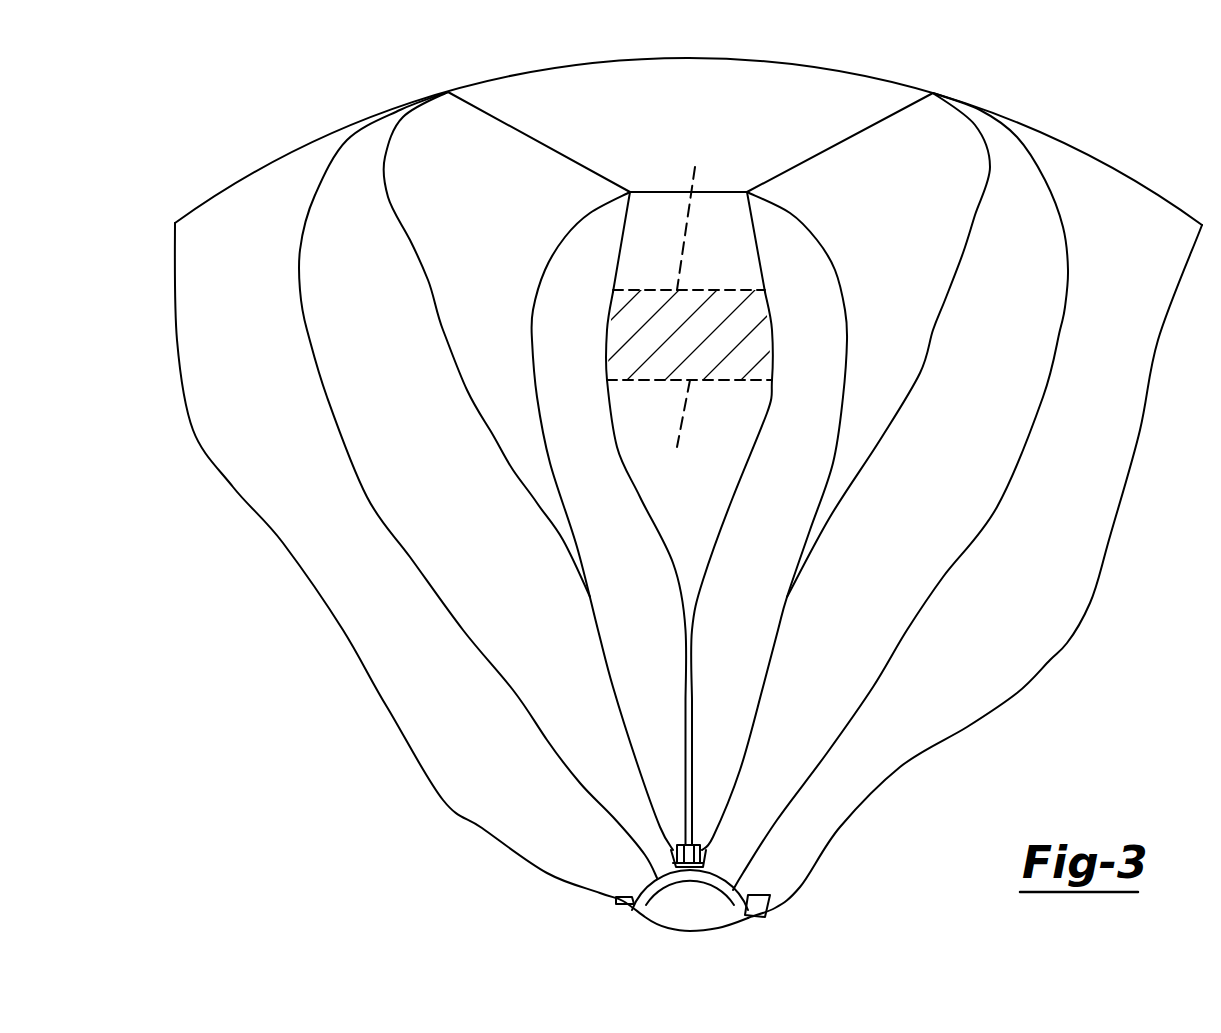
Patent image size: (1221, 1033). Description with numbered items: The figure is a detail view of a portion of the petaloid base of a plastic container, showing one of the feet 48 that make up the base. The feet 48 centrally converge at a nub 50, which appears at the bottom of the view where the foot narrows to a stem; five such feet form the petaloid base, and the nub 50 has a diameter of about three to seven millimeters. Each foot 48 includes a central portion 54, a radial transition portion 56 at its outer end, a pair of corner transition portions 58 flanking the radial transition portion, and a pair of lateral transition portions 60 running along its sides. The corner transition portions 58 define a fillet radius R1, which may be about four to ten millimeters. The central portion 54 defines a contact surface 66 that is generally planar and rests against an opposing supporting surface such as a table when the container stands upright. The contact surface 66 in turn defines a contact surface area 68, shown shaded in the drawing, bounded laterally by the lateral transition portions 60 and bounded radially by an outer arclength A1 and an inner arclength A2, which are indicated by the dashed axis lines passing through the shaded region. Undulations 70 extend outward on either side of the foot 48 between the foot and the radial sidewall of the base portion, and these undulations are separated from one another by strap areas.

The feet 48 is at (877, 257).
The nub 50 is at (690, 906).
The central portion 54 is at (690, 358).
The radial transition portion 56 is at (663, 208).
The corner transition portions 58 is at (577, 242).
The lateral transition portions 60 is at (550, 390).
The contact surface 66 is at (700, 308).
The contact surface area 68 is at (617, 338).
The undulations 70 is at (348, 377).
The fillet radius R1 is at (841, 187).
The arclength A1 is at (692, 215).
The arclength A2 is at (689, 433).